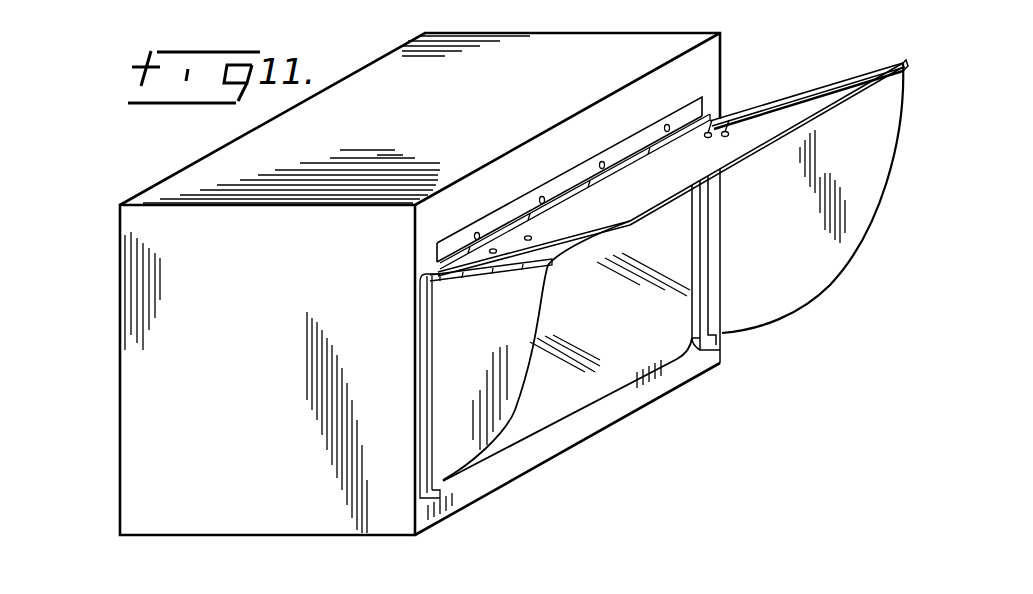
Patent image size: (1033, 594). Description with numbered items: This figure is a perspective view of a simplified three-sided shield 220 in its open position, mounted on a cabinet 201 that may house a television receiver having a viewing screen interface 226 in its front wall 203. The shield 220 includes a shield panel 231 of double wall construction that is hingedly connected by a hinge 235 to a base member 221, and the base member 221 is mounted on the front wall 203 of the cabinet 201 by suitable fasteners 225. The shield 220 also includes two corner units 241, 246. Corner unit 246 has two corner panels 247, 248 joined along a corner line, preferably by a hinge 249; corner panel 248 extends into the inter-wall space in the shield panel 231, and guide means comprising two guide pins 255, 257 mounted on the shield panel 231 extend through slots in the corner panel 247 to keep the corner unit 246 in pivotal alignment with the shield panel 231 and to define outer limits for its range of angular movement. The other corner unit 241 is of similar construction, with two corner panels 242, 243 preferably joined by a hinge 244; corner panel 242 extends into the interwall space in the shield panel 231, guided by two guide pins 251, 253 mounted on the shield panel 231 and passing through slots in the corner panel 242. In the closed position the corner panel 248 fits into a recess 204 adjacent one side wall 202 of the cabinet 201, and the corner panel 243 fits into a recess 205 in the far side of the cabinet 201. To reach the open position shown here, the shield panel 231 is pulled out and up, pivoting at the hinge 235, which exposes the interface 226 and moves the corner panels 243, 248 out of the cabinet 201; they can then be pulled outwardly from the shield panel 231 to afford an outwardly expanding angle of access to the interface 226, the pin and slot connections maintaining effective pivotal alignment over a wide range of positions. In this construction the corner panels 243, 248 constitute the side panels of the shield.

The cabinet 201 is at (113, 372).
The side wall 202 is at (137, 437).
The front wall 203 is at (488, 487).
The recess 204 is at (440, 408).
The recess 205 is at (718, 336).
The three-sided shield 220 is at (820, 82).
The base member 221 is at (623, 152).
The fasteners 225 is at (601, 162).
The viewing screen interface 226 is at (606, 365).
The shield panel 231 is at (702, 165).
The hinge 235 is at (681, 122).
The corner unit 241 is at (839, 76).
The corner panel 242 is at (893, 125).
The corner panel 243 is at (815, 275).
The hinge 244 is at (905, 50).
The corner unit 246 is at (503, 423).
The corner panel 247 is at (576, 248).
The corner panel 248 is at (440, 366).
The hinge 249 is at (513, 277).
The guide pin 251 is at (726, 132).
The guide pin 253 is at (733, 121).
The guide pin 255 is at (491, 247).
The guide pin 257 is at (526, 236).